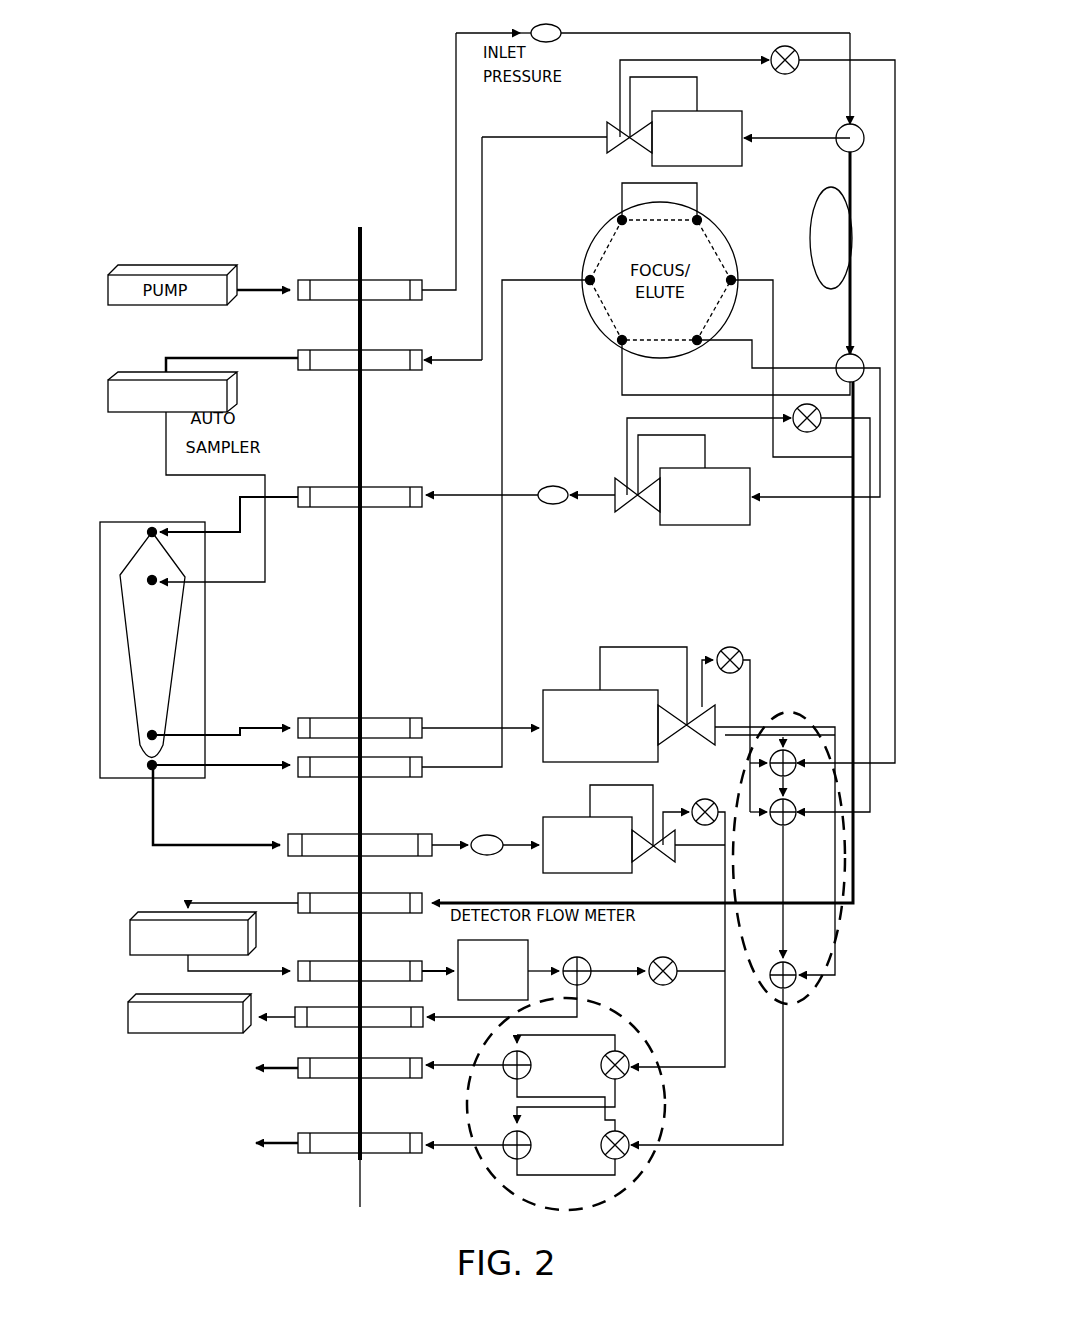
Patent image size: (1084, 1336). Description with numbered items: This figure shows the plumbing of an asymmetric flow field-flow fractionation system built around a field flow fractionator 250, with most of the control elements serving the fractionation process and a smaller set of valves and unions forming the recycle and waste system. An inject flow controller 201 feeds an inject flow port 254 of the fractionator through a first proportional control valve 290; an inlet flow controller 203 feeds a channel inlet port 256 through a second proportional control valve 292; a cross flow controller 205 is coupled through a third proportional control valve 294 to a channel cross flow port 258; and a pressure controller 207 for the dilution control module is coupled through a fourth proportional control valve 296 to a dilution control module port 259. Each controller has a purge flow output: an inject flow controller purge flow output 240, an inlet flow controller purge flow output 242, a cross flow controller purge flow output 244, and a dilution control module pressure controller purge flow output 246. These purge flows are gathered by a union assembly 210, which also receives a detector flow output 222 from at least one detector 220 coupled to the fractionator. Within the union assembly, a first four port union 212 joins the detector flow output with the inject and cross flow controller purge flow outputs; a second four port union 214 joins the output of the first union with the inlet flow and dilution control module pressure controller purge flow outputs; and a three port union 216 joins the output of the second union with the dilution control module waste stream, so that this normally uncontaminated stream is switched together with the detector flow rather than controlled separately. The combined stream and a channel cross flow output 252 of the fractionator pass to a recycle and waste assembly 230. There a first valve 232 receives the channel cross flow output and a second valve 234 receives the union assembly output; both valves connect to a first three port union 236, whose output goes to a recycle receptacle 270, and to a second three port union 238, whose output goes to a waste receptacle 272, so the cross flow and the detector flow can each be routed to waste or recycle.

The inject flow controller 201 is at (725, 112).
The proportional control valve 290 is at (797, 52).
The inject flow controller purge flow output 240 is at (895, 62).
The proportional control valve 292 is at (821, 412).
The inlet flow controller 203 is at (752, 503).
The inject flow port 254 is at (265, 476).
The field flow fractionator 250 is at (115, 517).
The channel inlet port 256 is at (270, 500).
The proportional control valve 296 is at (730, 645).
The dilution control module pressure controller purge flow output 246 is at (750, 660).
The cross flow controller purge flow output 244 is at (783, 742).
The inlet flow controller purge flow output 242 is at (870, 663).
The first four port union 212 is at (790, 757).
The second four port union 214 is at (795, 803).
The pressure controller 207 is at (560, 690).
The dilution control module port 259 is at (445, 728).
The proportional control valve 294 is at (720, 800).
The channel cross flow output 252 is at (440, 845).
The cross flow controller 205 is at (565, 817).
The channel cross flow port 258 is at (212, 853).
The detector flow output 222 is at (437, 970).
The three port union 216 is at (797, 975).
The first valve 232 is at (620, 1055).
The first three port union 236 is at (502, 1053).
The detector 220 is at (128, 1010).
The recycle receptacle 270 is at (300, 1078).
The waste receptacle 272 is at (295, 1150).
The recycle and waste assembly 230 is at (483, 1153).
The second three port union 238 is at (503, 1143).
The second valve 234 is at (633, 1148).
The union assembly 210 is at (760, 1145).